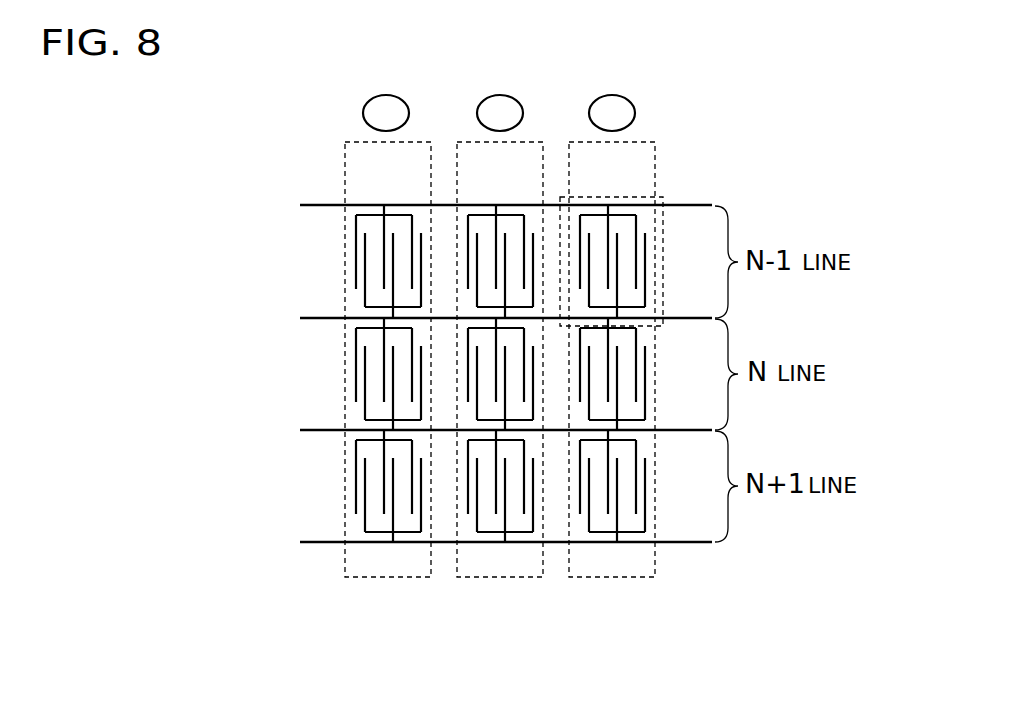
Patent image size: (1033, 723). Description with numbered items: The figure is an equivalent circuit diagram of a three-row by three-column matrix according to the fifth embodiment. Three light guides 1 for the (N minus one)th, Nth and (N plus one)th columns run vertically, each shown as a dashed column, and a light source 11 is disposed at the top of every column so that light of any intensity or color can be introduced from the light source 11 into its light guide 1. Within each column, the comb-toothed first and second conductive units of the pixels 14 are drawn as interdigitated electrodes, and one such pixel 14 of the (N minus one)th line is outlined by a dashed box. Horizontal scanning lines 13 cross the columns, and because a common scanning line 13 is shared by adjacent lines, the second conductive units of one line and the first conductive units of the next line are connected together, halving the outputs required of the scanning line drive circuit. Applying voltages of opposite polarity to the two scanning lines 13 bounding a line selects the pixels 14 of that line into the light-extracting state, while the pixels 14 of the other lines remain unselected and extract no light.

The light guide 1 is at (500, 379).
The light source 11 is at (503, 80).
The scanning line 13 is at (451, 350).
The pixel 14 is at (663, 197).